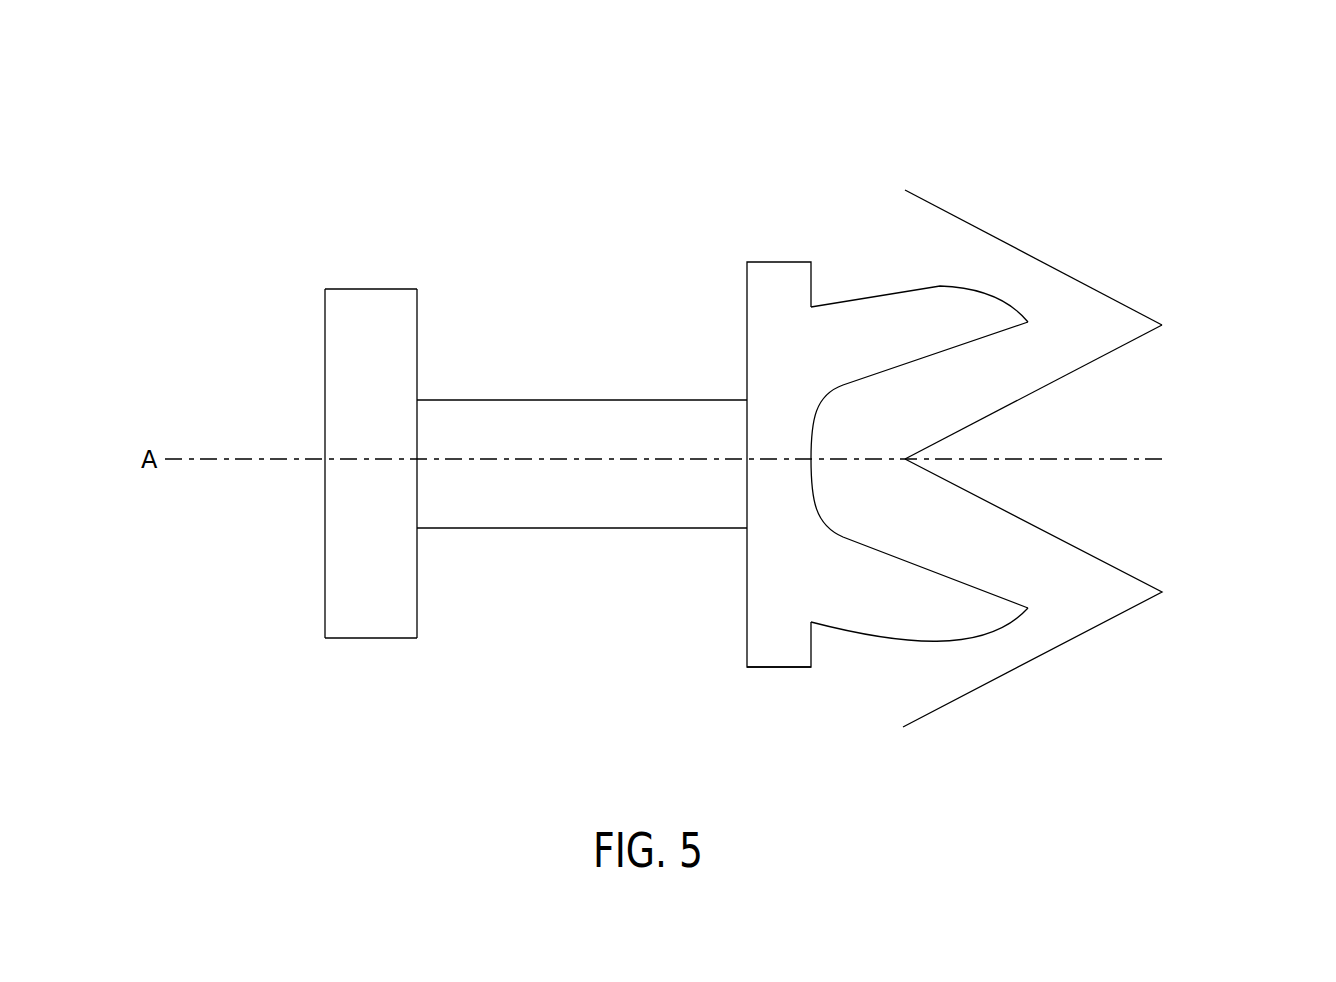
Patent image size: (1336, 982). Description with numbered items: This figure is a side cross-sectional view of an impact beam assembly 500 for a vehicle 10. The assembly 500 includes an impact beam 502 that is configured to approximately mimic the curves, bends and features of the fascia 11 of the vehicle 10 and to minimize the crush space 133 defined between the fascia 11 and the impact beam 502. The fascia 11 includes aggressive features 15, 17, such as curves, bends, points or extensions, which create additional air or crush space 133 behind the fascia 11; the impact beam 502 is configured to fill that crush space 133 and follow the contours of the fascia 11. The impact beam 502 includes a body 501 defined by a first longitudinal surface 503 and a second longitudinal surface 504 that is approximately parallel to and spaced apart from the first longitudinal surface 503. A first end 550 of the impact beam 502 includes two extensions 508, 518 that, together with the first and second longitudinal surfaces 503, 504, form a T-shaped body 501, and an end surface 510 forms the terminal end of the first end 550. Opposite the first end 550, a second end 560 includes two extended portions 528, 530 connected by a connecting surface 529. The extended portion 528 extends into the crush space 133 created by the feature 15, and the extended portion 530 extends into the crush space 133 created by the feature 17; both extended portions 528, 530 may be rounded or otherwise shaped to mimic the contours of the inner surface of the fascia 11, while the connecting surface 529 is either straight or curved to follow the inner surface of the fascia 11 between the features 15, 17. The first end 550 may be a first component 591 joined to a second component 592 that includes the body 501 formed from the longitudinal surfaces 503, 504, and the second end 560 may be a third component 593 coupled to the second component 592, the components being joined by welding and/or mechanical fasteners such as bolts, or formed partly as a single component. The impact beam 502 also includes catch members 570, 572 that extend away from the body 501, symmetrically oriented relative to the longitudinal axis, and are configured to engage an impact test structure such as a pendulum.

The impact beam assembly 500 is at (180, 140).
The first end 550 is at (298, 315).
The extension 508 is at (347, 289).
The extension 518 is at (375, 638).
The end surface 510 is at (325, 378).
The body 501 is at (342, 416).
The impact beam 502 is at (541, 383).
The first longitudinal surface 503 is at (420, 400).
The second longitudinal surface 504 is at (463, 528).
The catch member 570 is at (745, 263).
The catch member 572 is at (747, 668).
The second end 560 is at (872, 290).
The extended portion 528 is at (963, 287).
The connecting surface 529 is at (812, 483).
The extended portion 530 is at (982, 622).
The first component 591 is at (408, 188).
The second component 592 is at (551, 238).
The third component 593 is at (810, 192).
The vehicle 10 is at (1224, 402).
The fascia 11 is at (1138, 306).
The feature 15 is at (1152, 333).
The feature 17 is at (1162, 592).
The crush space 133 is at (1036, 298).